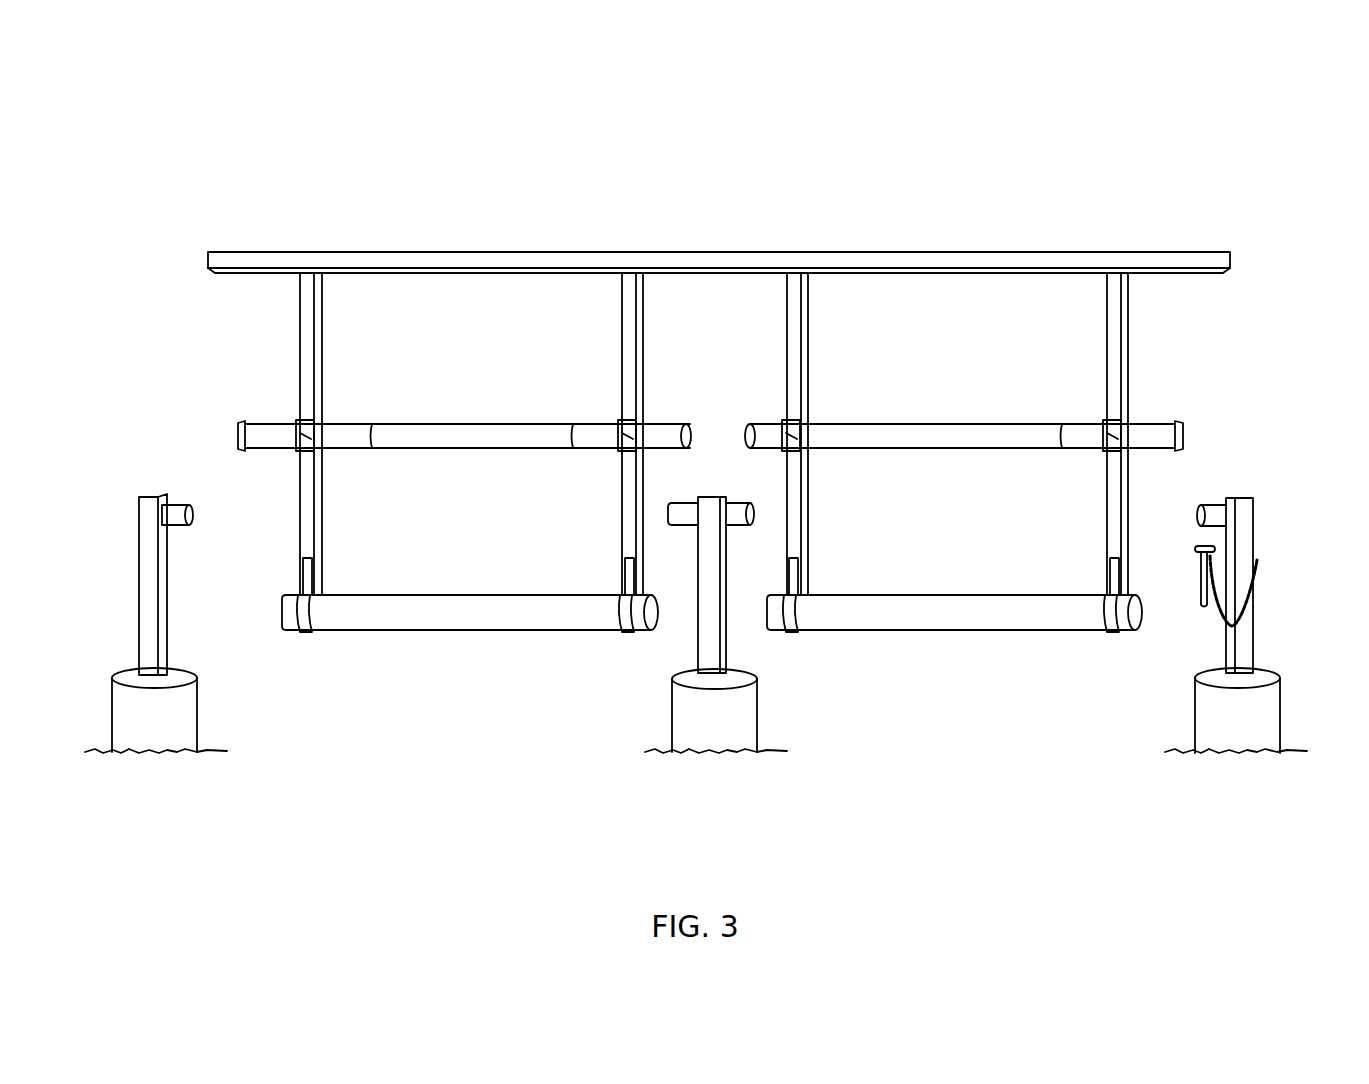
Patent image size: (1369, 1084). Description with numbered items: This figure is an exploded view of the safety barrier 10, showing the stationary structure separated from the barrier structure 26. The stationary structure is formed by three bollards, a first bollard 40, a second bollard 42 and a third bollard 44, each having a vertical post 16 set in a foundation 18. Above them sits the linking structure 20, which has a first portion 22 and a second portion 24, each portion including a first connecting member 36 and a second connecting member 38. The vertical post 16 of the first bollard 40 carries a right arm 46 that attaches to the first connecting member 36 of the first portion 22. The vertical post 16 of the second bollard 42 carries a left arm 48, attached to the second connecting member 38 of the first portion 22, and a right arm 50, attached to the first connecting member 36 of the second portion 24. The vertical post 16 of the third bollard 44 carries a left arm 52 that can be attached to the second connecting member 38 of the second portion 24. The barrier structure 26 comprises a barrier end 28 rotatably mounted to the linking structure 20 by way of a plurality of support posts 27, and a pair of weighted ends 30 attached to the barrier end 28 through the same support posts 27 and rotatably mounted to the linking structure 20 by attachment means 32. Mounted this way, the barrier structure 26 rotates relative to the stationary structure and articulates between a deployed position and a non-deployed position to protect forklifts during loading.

The safety barrier 10 is at (716, 200).
The vertical post 16 is at (148, 642).
The foundation 18 is at (742, 727).
The linking structure 20 is at (400, 410).
The first portion 22 is at (425, 423).
The second portion 24 is at (1040, 423).
The barrier structure 26 is at (995, 243).
The support posts 27 is at (306, 290).
The barrier end 28 is at (348, 265).
The weighted ends 30 is at (430, 620).
The attachment means 32 is at (305, 441).
The first connecting member 36 is at (270, 432).
The second connecting member 38 is at (665, 423).
The first bollard 40 is at (700, 641).
The second bollard 42 is at (712, 626).
The third bollard 44 is at (1205, 612).
The right arm 46 is at (194, 515).
The left arm 48 is at (687, 517).
The right arm 50 is at (740, 517).
The left arm 52 is at (1208, 503).